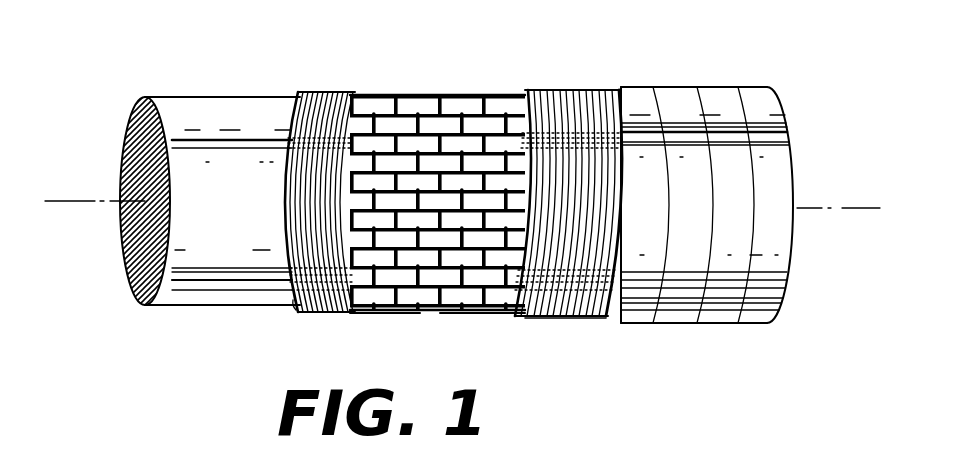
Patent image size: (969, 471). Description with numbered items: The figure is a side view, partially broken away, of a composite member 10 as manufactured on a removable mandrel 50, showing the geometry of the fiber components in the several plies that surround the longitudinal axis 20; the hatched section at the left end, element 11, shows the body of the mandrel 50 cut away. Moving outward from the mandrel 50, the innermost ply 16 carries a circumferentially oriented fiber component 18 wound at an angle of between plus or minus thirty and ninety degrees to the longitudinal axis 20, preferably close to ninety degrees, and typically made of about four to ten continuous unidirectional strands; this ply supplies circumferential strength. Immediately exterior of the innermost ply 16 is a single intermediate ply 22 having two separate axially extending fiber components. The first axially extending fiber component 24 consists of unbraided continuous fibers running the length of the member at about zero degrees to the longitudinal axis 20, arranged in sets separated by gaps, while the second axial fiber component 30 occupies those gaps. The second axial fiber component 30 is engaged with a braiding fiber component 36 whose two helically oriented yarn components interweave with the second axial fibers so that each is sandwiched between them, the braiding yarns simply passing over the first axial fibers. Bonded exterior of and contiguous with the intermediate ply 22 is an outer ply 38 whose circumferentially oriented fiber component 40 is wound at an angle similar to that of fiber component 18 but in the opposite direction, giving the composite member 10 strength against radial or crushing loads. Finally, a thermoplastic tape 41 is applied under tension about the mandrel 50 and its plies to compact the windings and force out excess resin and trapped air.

The composite member 10 is at (462, 52).
The inner tube 11 is at (140, 142).
The innermost ply 16 is at (303, 86).
The fiber component 18 is at (293, 308).
The longitudinal axis 20 is at (848, 197).
The intermediate ply 22 is at (462, 326).
The first axially extending fiber component 24 is at (410, 92).
The second axial fiber component 30 is at (392, 310).
The braiding fiber component 36 is at (475, 310).
The outer ply 38 is at (560, 82).
The circumferentially oriented fiber component 40 is at (565, 318).
The thermoplastic tape 41 is at (668, 80).
The mandrel 50 is at (195, 308).